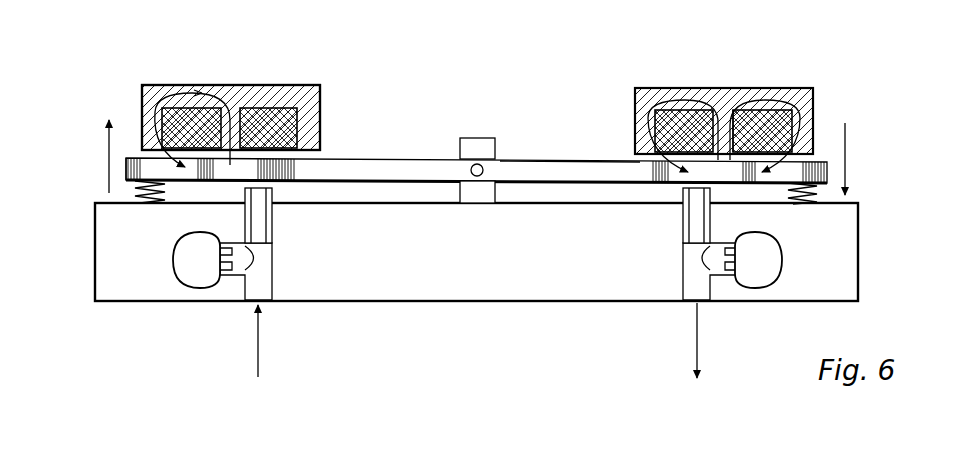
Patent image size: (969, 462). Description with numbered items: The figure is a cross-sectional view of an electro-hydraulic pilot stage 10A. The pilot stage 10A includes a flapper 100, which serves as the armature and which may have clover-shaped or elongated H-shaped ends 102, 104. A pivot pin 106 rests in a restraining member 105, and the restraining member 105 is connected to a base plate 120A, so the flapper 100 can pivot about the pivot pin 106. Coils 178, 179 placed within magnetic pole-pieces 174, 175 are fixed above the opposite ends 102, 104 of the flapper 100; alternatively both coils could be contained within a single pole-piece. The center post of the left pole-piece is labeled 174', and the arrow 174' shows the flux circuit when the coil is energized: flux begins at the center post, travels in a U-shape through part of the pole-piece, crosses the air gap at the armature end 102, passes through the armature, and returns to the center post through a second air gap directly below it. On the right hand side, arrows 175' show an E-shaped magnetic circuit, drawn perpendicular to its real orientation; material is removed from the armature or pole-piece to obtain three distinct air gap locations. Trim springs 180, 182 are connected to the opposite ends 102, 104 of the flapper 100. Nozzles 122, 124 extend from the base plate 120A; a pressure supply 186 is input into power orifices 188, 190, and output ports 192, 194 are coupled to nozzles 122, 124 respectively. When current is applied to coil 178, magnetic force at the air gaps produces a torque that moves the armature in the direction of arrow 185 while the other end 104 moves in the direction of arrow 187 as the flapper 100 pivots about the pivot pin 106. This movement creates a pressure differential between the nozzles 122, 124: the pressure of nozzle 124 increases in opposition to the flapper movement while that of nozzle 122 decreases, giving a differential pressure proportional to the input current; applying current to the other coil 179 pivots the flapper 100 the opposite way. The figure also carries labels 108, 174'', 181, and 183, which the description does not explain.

The pilot stage 10A is at (157, 53).
The flapper 100 is at (436, 156).
The end of flapper 102 is at (125, 166).
The end of flapper 104 is at (846, 160).
The restraining member 105 is at (490, 150).
The pivot pin 106 is at (476, 164).
The armature arm 108 is at (543, 167).
The base plate 120A is at (417, 305).
The nozzle 122 is at (272, 197).
The nozzle 124 is at (683, 193).
The magnetic pole-piece 174 is at (229, 80).
The center post of the pole-piece 174' is at (193, 90).
The first electromagnet flux path 174'' is at (130, 71).
The magnetic pole-piece 175 is at (710, 104).
The right hand side magnetic circuit arrows 175' is at (744, 90).
The coil 178 is at (310, 123).
The coil 179 is at (753, 113).
The trim spring 180 is at (137, 197).
The first pole 181 is at (320, 95).
The trim spring 182 is at (818, 200).
The second core 183 is at (637, 137).
The arrow 185 is at (113, 135).
The pressure supply 186 is at (190, 277).
The arrow 187 is at (822, 140).
The power orifice 188 is at (223, 275).
The power orifice 190 is at (732, 275).
The output port 192 is at (260, 287).
The output port 194 is at (703, 297).